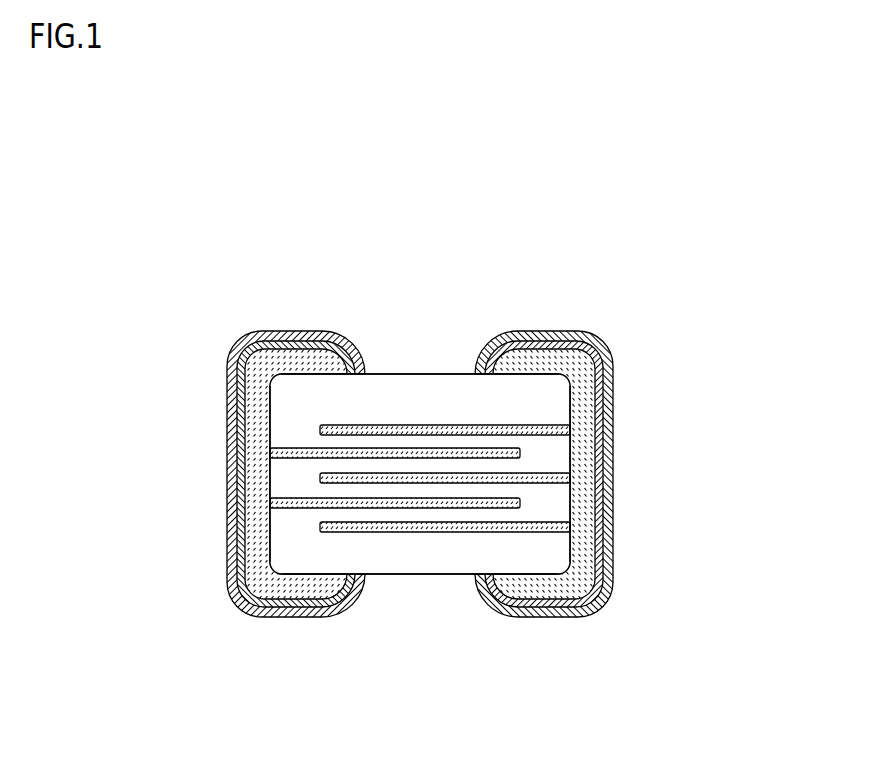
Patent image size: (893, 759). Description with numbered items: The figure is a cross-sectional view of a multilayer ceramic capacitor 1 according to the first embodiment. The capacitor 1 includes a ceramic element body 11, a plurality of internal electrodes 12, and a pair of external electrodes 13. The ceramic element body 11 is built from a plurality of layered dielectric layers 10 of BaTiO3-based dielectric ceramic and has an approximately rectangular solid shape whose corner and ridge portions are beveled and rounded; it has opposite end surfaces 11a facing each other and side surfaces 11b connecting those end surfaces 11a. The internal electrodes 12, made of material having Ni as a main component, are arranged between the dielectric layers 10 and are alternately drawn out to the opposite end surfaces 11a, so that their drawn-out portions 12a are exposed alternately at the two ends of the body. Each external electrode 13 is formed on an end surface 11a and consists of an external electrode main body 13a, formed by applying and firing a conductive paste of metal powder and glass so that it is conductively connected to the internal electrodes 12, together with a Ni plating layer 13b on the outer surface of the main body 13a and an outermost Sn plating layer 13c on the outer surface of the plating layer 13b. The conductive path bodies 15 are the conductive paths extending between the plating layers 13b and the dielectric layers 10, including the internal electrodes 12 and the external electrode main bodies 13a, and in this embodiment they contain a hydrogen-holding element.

The multilayer ceramic capacitor 1 is at (156, 209).
The dielectric layer 10 is at (353, 466).
The ceramic element body 11 is at (431, 491).
The end surface 11a is at (270, 517).
The side surface 11b is at (455, 373).
The internal electrode 12 is at (303, 510).
The drawn-out portion 12a is at (270, 453).
The external electrode 13 is at (431, 487).
The external electrode main body 13a is at (250, 384).
The plating layer 13b is at (241, 352).
The outermost plating layer 13c is at (242, 340).
The conductive path body 15 is at (431, 509).